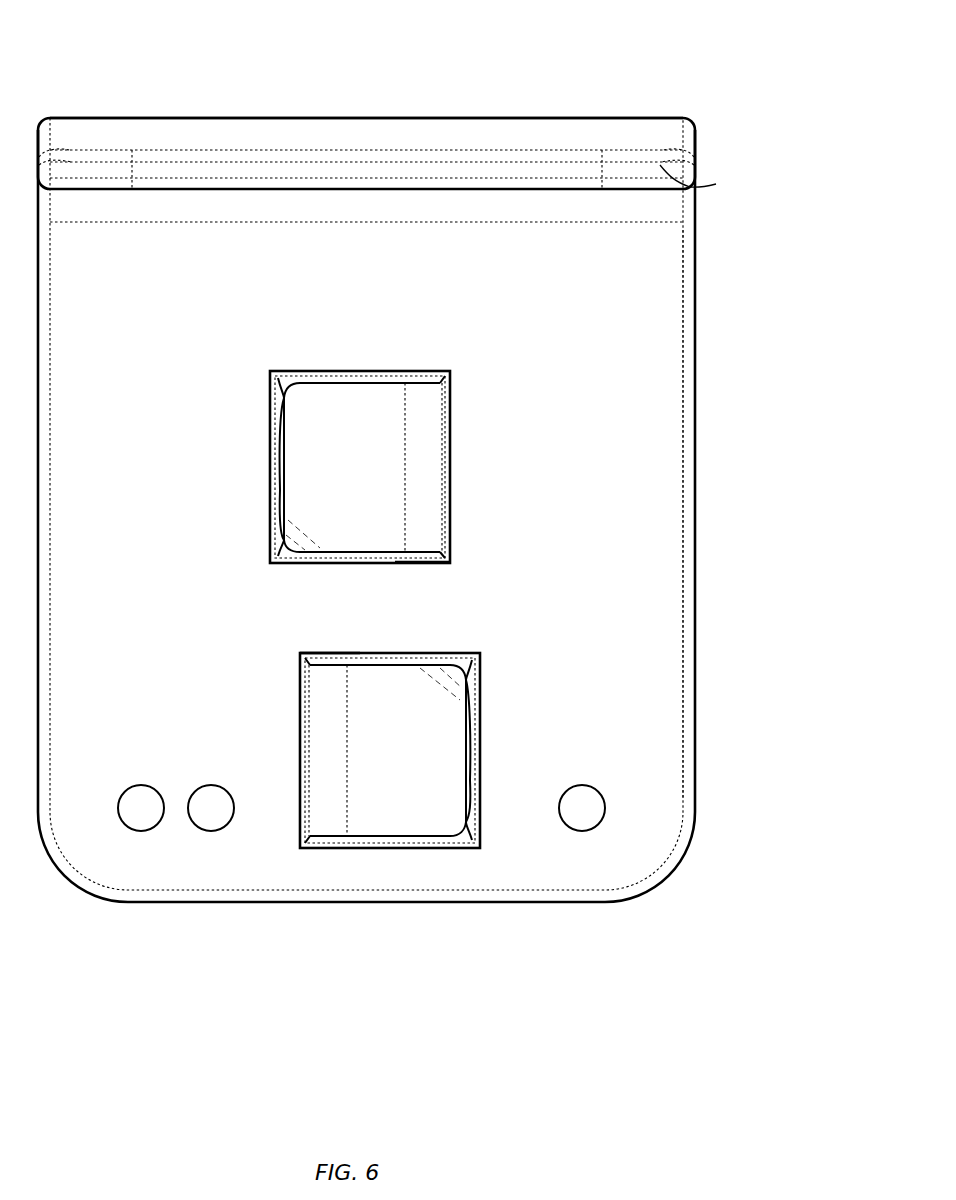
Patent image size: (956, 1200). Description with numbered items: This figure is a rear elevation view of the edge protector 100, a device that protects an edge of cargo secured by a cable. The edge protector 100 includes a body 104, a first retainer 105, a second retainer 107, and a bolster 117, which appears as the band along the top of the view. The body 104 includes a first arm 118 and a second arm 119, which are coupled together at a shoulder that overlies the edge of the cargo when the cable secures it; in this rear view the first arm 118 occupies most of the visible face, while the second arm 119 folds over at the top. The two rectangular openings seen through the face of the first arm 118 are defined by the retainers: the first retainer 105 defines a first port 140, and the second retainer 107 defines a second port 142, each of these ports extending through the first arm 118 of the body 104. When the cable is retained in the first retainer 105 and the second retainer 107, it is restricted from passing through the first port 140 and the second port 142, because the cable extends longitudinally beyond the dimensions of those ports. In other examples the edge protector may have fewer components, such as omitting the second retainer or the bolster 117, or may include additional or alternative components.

The edge protector 100 is at (582, 42).
The body 104 is at (659, 472).
The first retainer 105 is at (315, 490).
The second retainer 107 is at (435, 765).
The bolster 117 is at (222, 133).
The first arm 118 is at (659, 343).
The second arm 119 is at (710, 181).
The first port 140 is at (398, 563).
The second port 142 is at (315, 653).